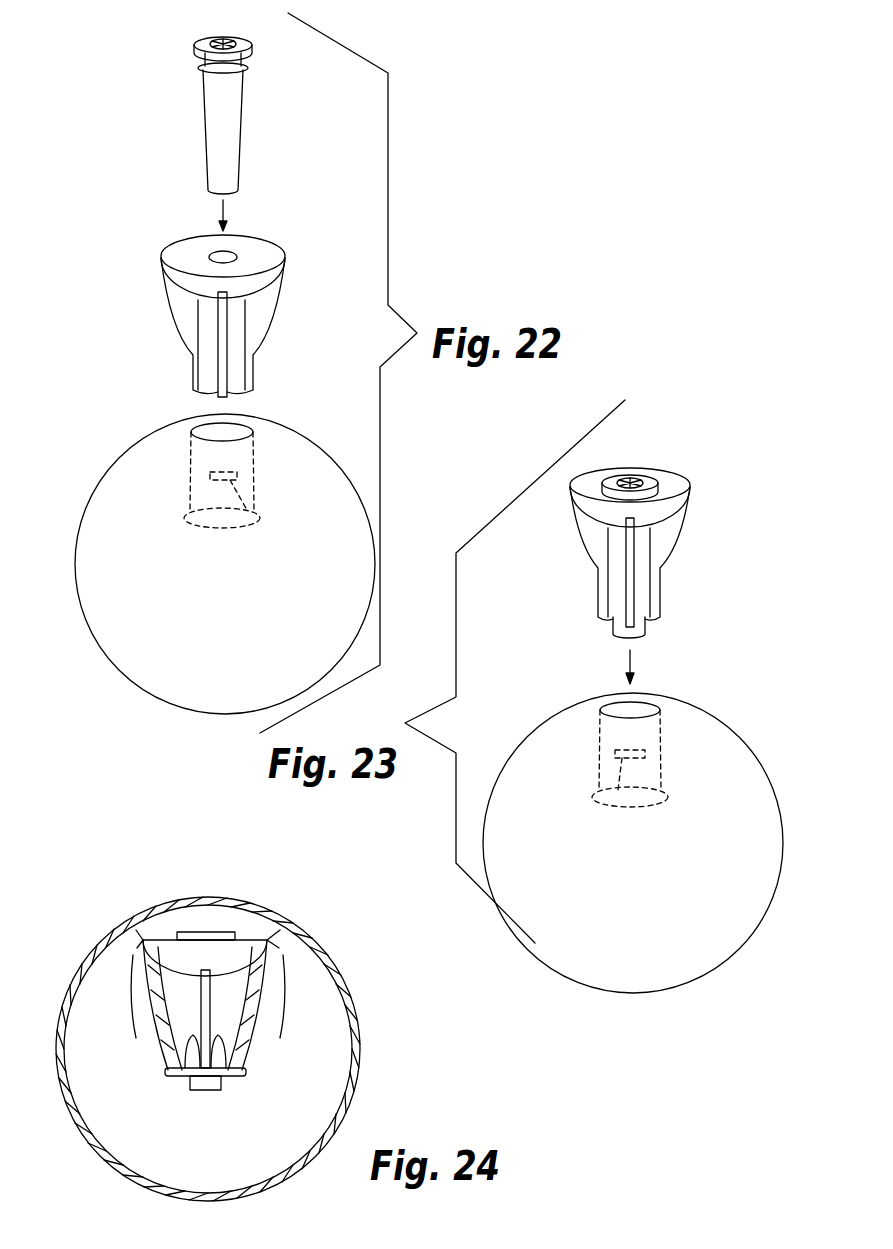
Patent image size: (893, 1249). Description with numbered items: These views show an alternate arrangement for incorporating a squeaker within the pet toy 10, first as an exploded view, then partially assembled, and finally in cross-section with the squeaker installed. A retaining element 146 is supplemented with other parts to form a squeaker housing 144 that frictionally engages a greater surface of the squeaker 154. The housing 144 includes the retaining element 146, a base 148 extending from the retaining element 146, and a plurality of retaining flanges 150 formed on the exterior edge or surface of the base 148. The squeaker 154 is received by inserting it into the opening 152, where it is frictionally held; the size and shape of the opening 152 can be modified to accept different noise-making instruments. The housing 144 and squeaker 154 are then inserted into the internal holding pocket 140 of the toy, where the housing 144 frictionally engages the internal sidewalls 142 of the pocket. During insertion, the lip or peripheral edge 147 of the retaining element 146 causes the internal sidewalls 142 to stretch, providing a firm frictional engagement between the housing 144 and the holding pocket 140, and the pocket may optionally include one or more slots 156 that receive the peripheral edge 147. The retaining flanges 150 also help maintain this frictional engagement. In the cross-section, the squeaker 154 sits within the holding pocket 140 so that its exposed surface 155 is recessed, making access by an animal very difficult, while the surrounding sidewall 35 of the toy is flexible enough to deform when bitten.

In FIG. 22, the ball 10 is at (225, 536).
In FIG. 23, the ball 10 is at (637, 828).
In FIG. 24, the ball 10 is at (239, 1017).
In FIG. 24, the sidewall 35 is at (290, 930).
In FIG. 22, the internal holding pocket 140 is at (254, 521).
In FIG. 23, the internal holding pocket 140 is at (611, 819).
In FIG. 24, the internal holding pocket 140 is at (208, 986).
In FIG. 24, the internal sidewalls 142 is at (243, 1025).
In FIG. 22, the squeaker housing 144 is at (236, 286).
In FIG. 23, the squeaker housing 144 is at (658, 511).
In FIG. 22, the retaining element 146 is at (245, 248).
In FIG. 23, the retaining element 146 is at (665, 478).
In FIG. 24, the retaining element 146 is at (165, 945).
In FIG. 22, the peripheral edge 147 is at (265, 254).
In FIG. 23, the peripheral edge 147 is at (688, 485).
In FIG. 24, the peripheral edge 147 is at (265, 935).
In FIG. 22, the base 148 is at (232, 325).
In FIG. 23, the base 148 is at (640, 580).
In FIG. 24, the base 148 is at (222, 1053).
In FIG. 22, the retaining flanges 150 is at (190, 303).
In FIG. 23, the retaining flanges 150 is at (598, 538).
In FIG. 24, the retaining flanges 150 is at (189, 1077).
In FIG. 22, the opening 152 is at (222, 252).
In FIG. 22, the squeaker 154 is at (224, 113).
In FIG. 22, the exposed surface 155 is at (203, 38).
In FIG. 23, the exposed surface 155 is at (632, 480).
In FIG. 24, the exposed surface 155 is at (203, 930).
In FIG. 22, the slots 156 is at (250, 515).
In FIG. 23, the slots 156 is at (620, 792).
In FIG. 24, the slots 156 is at (270, 948).